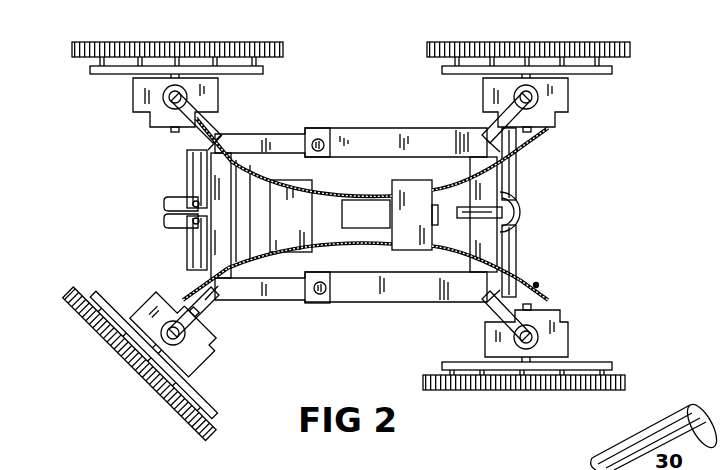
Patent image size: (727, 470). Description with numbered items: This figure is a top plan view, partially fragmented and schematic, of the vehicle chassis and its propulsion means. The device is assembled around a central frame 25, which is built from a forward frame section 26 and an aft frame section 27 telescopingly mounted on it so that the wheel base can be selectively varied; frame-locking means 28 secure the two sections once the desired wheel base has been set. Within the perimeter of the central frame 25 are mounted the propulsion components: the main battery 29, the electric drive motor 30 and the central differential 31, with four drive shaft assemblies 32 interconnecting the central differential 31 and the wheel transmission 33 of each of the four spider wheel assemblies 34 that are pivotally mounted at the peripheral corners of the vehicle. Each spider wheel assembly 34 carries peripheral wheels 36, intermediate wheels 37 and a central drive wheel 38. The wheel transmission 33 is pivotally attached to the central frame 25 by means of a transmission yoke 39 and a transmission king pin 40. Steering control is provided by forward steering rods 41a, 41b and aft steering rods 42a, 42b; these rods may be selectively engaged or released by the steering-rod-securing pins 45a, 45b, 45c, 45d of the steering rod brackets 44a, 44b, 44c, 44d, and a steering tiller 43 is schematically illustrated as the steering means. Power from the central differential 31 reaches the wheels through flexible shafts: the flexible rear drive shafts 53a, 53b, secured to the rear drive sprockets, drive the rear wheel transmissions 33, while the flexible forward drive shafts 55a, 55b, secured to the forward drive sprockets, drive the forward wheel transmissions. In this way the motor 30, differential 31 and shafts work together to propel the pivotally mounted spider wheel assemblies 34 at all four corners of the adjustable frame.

The central frame 25 is at (378, 116).
The forward frame section 26 is at (416, 130).
The aft frame section 27 is at (278, 114).
The frame-locking means 28 is at (328, 204).
The main battery 29 is at (291, 216).
The electric drive motor 30 is at (366, 214).
The central differential 31 is at (415, 215).
The drive shaft assemblies 32 is at (538, 285).
The wheel transmission 33 is at (133, 98).
The spider wheel assemblies 34 is at (198, 28).
The peripheral wheels 36 is at (72, 48).
The intermediate wheels 37 is at (578, 28).
The central drive wheel 38 is at (538, 28).
The transmission yoke 39 is at (488, 134).
The transmission king pin 40 is at (514, 337).
The forward steering rod 41a is at (548, 129).
The forward steering rod 41b is at (548, 292).
The aft steering rod 42a is at (195, 143).
The aft steering rod 42b is at (186, 300).
The steering tiller 43 is at (462, 218).
The steering rod bracket 44a is at (518, 193).
The steering rod bracket 44b is at (518, 231).
The steering rod bracket 44c is at (186, 197).
The steering rod bracket 44d is at (187, 236).
The steering-rod-securing pin 45a is at (517, 168).
The steering-rod-securing pin 45b is at (517, 262).
The steering-rod-securing pin 45c is at (187, 161).
The steering-rod-securing pin 45d is at (187, 258).
The flexible rear drive shaft 53a is at (312, 181).
The flexible rear drive shaft 53b is at (310, 254).
The flexible forward drive shaft 55a is at (434, 190).
The flexible forward drive shaft 55b is at (470, 255).